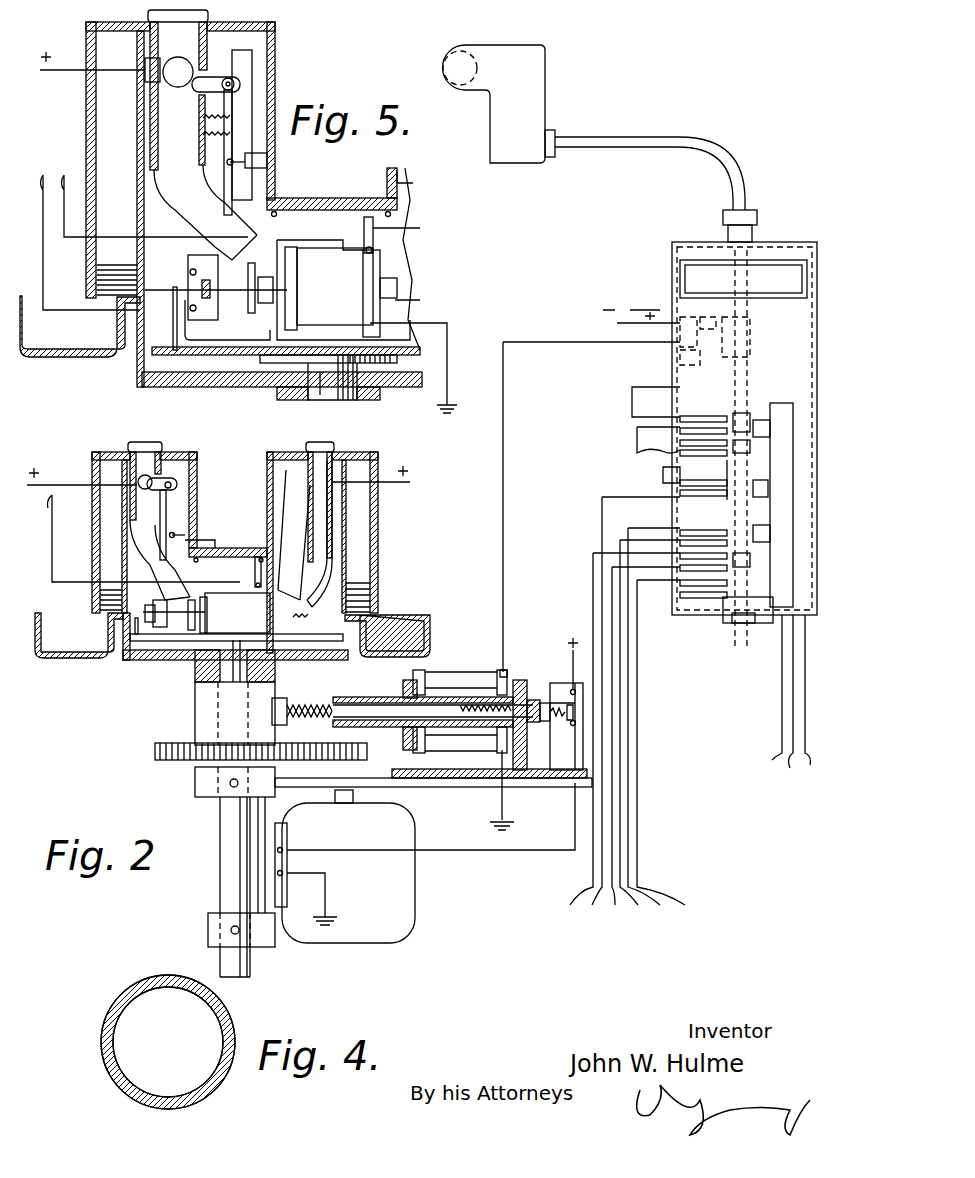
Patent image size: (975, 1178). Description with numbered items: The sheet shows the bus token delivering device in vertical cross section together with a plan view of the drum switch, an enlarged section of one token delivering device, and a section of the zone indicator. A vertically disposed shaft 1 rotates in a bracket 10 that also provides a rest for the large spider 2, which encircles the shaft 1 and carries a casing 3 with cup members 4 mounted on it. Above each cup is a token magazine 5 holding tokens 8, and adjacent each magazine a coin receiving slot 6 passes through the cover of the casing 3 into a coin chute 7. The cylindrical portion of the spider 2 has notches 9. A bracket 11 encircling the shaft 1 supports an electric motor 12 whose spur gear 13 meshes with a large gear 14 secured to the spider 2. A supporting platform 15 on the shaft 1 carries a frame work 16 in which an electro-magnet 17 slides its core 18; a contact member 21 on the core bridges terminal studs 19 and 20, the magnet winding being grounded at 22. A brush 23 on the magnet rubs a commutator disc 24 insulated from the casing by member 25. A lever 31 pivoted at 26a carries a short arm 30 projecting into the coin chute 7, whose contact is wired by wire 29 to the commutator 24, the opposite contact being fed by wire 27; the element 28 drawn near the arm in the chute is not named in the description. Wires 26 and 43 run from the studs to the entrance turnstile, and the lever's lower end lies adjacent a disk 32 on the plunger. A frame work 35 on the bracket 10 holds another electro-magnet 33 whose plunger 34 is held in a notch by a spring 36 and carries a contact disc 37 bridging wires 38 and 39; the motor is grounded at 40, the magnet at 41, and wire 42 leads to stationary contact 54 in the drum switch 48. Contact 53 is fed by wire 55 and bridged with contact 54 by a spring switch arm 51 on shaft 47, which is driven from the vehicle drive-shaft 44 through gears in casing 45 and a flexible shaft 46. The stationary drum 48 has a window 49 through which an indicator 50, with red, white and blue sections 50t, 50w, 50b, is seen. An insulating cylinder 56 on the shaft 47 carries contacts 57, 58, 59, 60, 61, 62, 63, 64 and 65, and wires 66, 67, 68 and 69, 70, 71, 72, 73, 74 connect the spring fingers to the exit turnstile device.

In FIG. 5, the shaft 1 is at (320, 400).
In FIG. 2, the shaft 1 is at (228, 692).
In FIG. 5, the spider 2 is at (365, 398).
In FIG. 2, the spider 2 is at (195, 735).
In FIG. 2, the casing 3 is at (637, 278).
In FIG. 5, the cup member 4 is at (78, 350).
In FIG. 2, the cup member 4 is at (78, 655).
In FIG. 5, the token magazine 5 is at (88, 118).
In FIG. 2, the token magazine 5 is at (92, 520).
In FIG. 5, the coin receiving slot 6 is at (206, 18).
In FIG. 2, the coin receiving slot 6 is at (162, 445).
In FIG. 5, the coin chute 7 is at (175, 190).
In FIG. 2, the coin chute 7 is at (231, 533).
In FIG. 5, the tokens 8 is at (117, 234).
In FIG. 2, the tokens 8 is at (98, 603).
In FIG. 2, the notch 9 is at (276, 705).
In FIG. 2, the bracket 10 is at (455, 790).
In FIG. 2, the bracket 11 is at (266, 947).
In FIG. 2, the electric motor 12 is at (405, 900).
In FIG. 2, the spur gear 13 is at (365, 770).
In FIG. 2, the large gear 14 is at (162, 760).
In FIG. 5, the supporting platform 15 is at (420, 356).
In FIG. 2, the supporting platform 15 is at (338, 662).
In FIG. 5, the supporting frame work 16 is at (395, 300).
In FIG. 2, the supporting frame work 16 is at (150, 645).
In FIG. 5, the electro-magnet 17 is at (343, 290).
In FIG. 2, the electro-magnet 17 is at (206, 613).
In FIG. 5, the core 18 is at (185, 278).
In FIG. 2, the core 18 is at (160, 640).
In FIG. 5, the terminal stud 19 is at (188, 268).
In FIG. 2, the terminal stud 19 is at (155, 610).
In FIG. 5, the terminal stud 20 is at (177, 312).
In FIG. 2, the terminal stud 20 is at (140, 640).
In FIG. 5, the contact member 21 is at (210, 300).
In FIG. 2, the contact member 21 is at (168, 645).
In FIG. 5, the ground 22 is at (450, 415).
In FIG. 2, the ground 22 is at (319, 621).
In FIG. 5, the brush 23 is at (420, 232).
In FIG. 2, the brush 23 is at (230, 525).
In FIG. 5, the commutator disc 24 is at (370, 210).
In FIG. 2, the commutator disc 24 is at (251, 555).
In FIG. 5, the insulating member 25 is at (322, 206).
In FIG. 2, the insulating member 25 is at (228, 542).
In FIG. 5, the wire 26 is at (81, 228).
In FIG. 2, the wire 26 is at (129, 538).
In FIG. 5, the pivot 26a is at (268, 160).
In FIG. 2, the pivot 26a is at (185, 530).
In FIG. 5, the wire 27 is at (90, 74).
In FIG. 2, the wire 27 is at (222, 485).
In FIG. 5, the ball valve 28 is at (178, 88).
In FIG. 2, the ball valve 28 is at (145, 475).
In FIG. 5, the wire 29 is at (243, 82).
In FIG. 2, the wire 29 is at (178, 480).
In FIG. 5, the short arm 30 is at (230, 78).
In FIG. 2, the short arm 30 is at (172, 485).
In FIG. 5, the lever 31 is at (230, 118).
In FIG. 2, the lever 31 is at (168, 500).
In FIG. 5, the disk 32 is at (252, 270).
In FIG. 2, the disk 32 is at (218, 687).
In FIG. 2, the electro-magnet 33 is at (460, 690).
In FIG. 2, the plunger 34 is at (382, 728).
In FIG. 2, the frame work 35 is at (537, 695).
In FIG. 5, the spring 36 is at (262, 387).
In FIG. 2, the spring 36 is at (358, 678).
In FIG. 2, the contact disc 37 is at (563, 740).
In FIG. 2, the circuit wire 38 is at (580, 672).
In FIG. 2, the circuit wire 39 is at (574, 840).
In FIG. 2, the ground 40 is at (334, 920).
In FIG. 2, the ground 41 is at (496, 830).
In FIG. 2, the wire 42 is at (504, 602).
In FIG. 5, the wire 43 is at (152, 192).
In FIG. 2, the drive-shaft 44 is at (478, 70).
In FIG. 2, the casing 45 is at (538, 92).
In FIG. 2, the flexible shaft 46 is at (722, 160).
In FIG. 2, the shaft 47 is at (752, 232).
In FIG. 5, the drum switch 48 is at (225, 298).
In FIG. 2, the window 49 is at (744, 444).
In FIG. 2, the indicator 50 is at (773, 281).
In FIG. 4, the indicator 50 is at (168, 1042).
In FIG. 4, the red zone section 50t is at (140, 985).
In FIG. 4, the white zone section 50w is at (232, 1028).
In FIG. 4, the blue zone section 50b is at (112, 1075).
In FIG. 2, the spring switch arm 51 is at (732, 355).
In FIG. 2, the contact 53 is at (709, 331).
In FIG. 2, the stationary contact 54 is at (695, 367).
In FIG. 2, the wire 55 is at (616, 323).
In FIG. 2, the insulating cylinder 56 is at (765, 610).
In FIG. 2, the contact 57 is at (733, 610).
In FIG. 2, the contact 58 is at (750, 570).
In FIG. 2, the contact 59 is at (765, 533).
In FIG. 2, the contact 60 is at (761, 501).
In FIG. 2, the contact 61 is at (730, 500).
In FIG. 2, the contact 62 is at (775, 405).
In FIG. 2, the contact 63 is at (754, 457).
In FIG. 2, the contact 64 is at (742, 412).
In FIG. 2, the contact 65 is at (636, 440).
In FIG. 2, the wire 66 is at (813, 702).
In FIG. 2, the wire 67 is at (788, 705).
In FIG. 2, the wire 68 is at (763, 699).
In FIG. 2, the wire 69 is at (675, 758).
In FIG. 2, the wire 70 is at (656, 732).
In FIG. 2, the wire 71 is at (650, 738).
In FIG. 2, the wire 72 is at (642, 752).
In FIG. 2, the wire 73 is at (627, 717).
In FIG. 2, the wire 74 is at (612, 745).